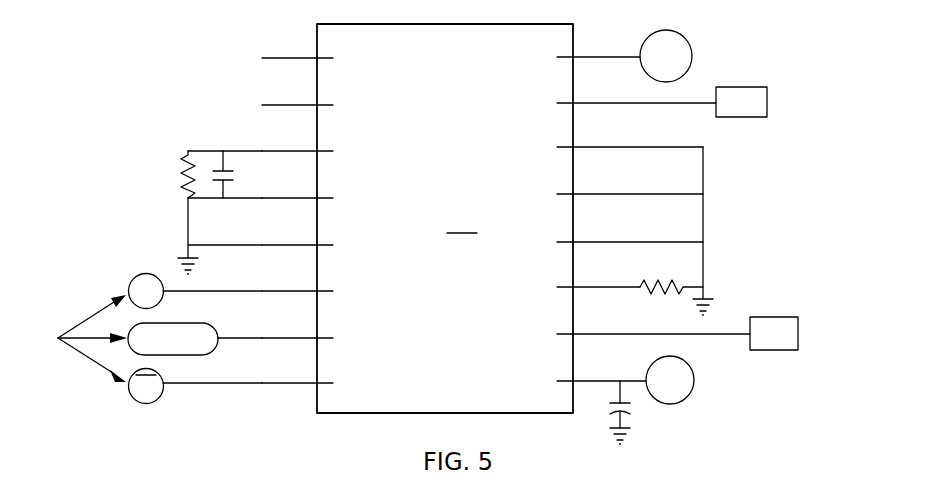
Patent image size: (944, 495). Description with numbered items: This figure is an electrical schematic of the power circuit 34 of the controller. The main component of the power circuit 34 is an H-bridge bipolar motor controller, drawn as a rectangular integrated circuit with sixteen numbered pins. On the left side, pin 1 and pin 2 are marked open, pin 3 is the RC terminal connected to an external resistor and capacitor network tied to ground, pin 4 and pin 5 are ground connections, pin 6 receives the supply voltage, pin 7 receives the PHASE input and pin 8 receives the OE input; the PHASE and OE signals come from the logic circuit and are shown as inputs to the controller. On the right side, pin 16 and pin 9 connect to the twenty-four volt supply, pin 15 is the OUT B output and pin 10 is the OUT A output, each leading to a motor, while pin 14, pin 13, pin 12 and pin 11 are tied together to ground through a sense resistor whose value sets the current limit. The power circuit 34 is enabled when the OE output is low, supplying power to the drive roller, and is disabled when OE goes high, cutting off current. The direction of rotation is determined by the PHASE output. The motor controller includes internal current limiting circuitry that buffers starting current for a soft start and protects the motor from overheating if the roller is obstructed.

The power circuit 34 is at (196, 81).
The pin 1 (OPEN) 1 is at (297, 44).
The pin 2 (OPEN) 2 is at (297, 91).
The pin 3 (RC) 3 is at (297, 137).
The pin 4 (GND) 4 is at (297, 184).
The pin 5 (GND) 5 is at (297, 231).
The pin 6 (VCC) 6 is at (297, 277).
The pin 7 (PHASE) 7 is at (297, 324).
The pin 8 (OE) 8 is at (297, 369).
The pin 9 is at (601, 367).
The pin 10 (OUT A) 10 is at (653, 320).
The pin 11 is at (598, 273).
The pin 12 is at (630, 228).
The pin 13 is at (630, 180).
The pin 14 is at (630, 133).
The pin 15 (OUT B) 15 is at (636, 89).
The pin 16 is at (598, 43).